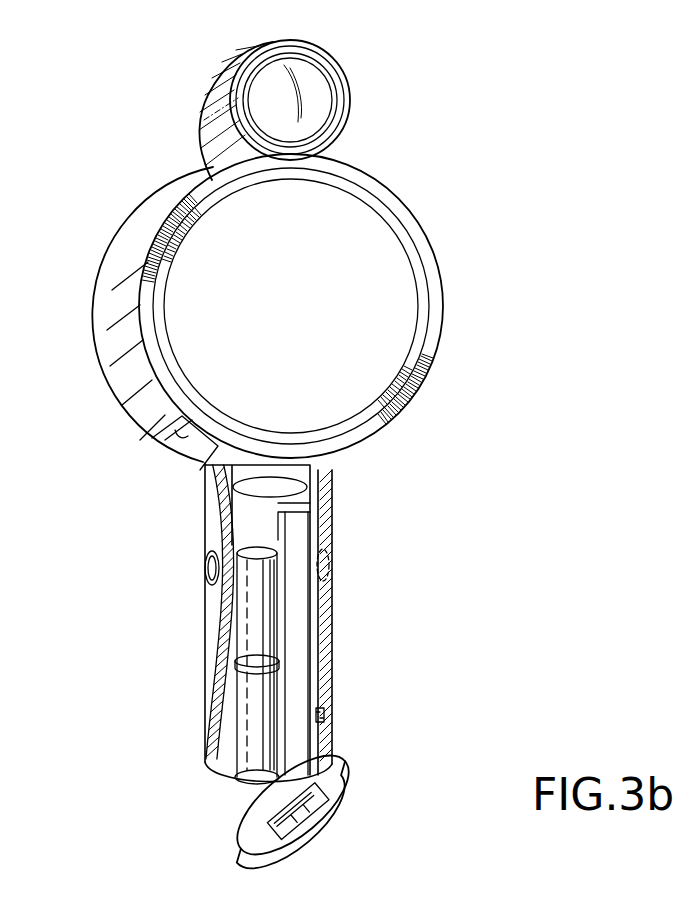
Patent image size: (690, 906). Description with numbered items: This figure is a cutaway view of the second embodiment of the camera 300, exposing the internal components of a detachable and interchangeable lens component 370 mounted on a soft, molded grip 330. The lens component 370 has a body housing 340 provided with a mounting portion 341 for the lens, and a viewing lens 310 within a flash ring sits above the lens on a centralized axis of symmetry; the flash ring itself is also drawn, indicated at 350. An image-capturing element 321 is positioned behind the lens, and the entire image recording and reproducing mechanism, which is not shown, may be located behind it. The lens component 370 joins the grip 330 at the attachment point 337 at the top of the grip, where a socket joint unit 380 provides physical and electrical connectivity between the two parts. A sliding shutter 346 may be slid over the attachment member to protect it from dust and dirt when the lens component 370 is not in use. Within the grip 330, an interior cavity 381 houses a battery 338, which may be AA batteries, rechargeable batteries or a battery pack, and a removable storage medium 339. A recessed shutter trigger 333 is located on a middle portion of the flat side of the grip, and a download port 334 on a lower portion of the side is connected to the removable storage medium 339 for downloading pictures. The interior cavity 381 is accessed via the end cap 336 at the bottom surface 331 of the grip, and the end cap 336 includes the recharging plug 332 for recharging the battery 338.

The camera 300 is at (82, 268).
The viewing lens 310 is at (266, 87).
The image-capturing element 321 is at (309, 319).
The grip 330 is at (470, 519).
The bottom surface 331 is at (341, 788).
The recharging plug 332 is at (307, 821).
The shutter trigger 333 is at (206, 566).
The download port 334 is at (325, 714).
The end cap 336 is at (243, 835).
The attachment point 337 is at (334, 474).
The battery 338 is at (250, 608).
The removable storage medium 339 is at (297, 612).
The housing 340 is at (420, 231).
The mounting portion 341 is at (215, 192).
The sliding shutter 346 is at (165, 448).
The lens ring 350 is at (345, 99).
The lens component 370 is at (508, 342).
The socket joint unit 380 is at (266, 482).
The interior cavity 381 is at (240, 723).